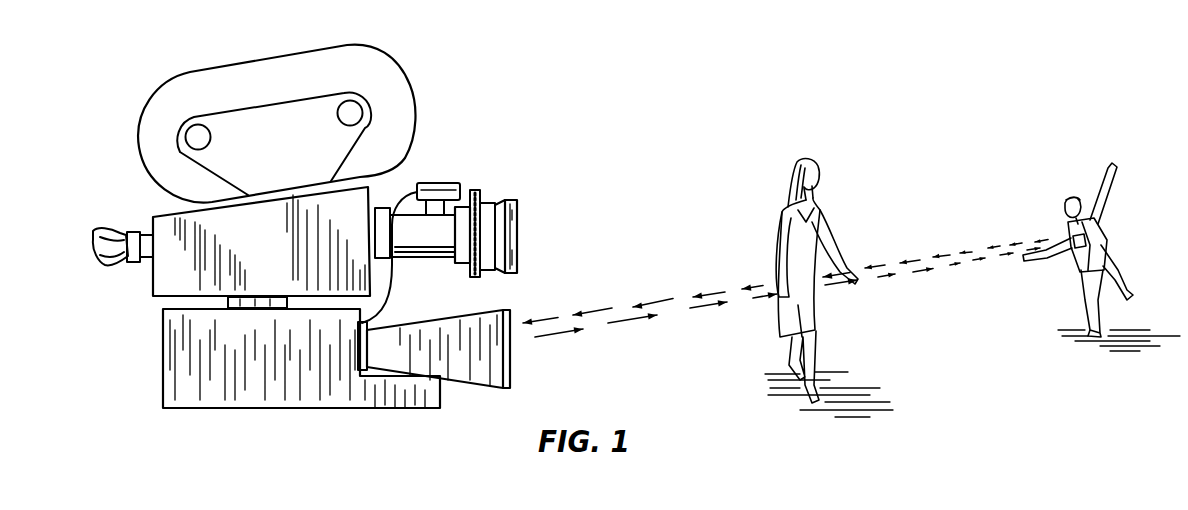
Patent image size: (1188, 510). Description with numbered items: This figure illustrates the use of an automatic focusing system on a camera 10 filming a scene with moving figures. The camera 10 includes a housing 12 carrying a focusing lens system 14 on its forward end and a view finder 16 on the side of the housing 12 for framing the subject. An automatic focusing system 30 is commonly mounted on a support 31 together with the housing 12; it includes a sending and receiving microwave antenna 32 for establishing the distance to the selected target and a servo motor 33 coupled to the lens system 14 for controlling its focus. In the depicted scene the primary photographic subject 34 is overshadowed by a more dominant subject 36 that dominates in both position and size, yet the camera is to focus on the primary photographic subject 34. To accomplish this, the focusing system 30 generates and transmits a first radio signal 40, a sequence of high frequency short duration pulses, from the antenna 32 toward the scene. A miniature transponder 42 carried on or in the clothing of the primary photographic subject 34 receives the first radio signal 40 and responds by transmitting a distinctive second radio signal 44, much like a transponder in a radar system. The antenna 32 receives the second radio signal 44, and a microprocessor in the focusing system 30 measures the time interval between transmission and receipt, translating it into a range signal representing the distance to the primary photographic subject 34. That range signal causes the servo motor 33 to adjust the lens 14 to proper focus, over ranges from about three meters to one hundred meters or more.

The camera 10 is at (128, 153).
The housing 12 is at (160, 221).
The focusing lens system 14 is at (489, 212).
The view finder 16 is at (113, 229).
The automatic focusing system 30 is at (287, 407).
The support 31 is at (251, 304).
The sending and receiving microwave antenna 32 is at (460, 323).
The servo motor 33 is at (448, 183).
The primary photographic subject 34 is at (1100, 221).
The dominant subject 36 is at (782, 212).
The first radio signal 40 is at (705, 308).
The transponder 42 is at (1074, 258).
The second radio signal 44 is at (712, 294).